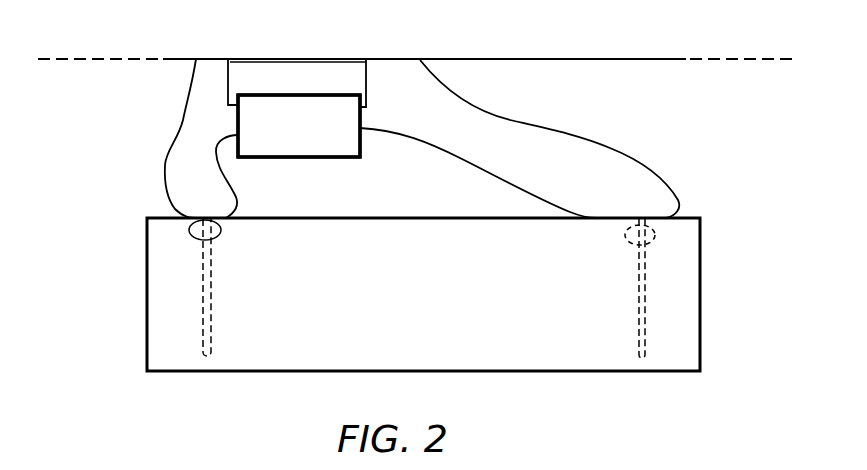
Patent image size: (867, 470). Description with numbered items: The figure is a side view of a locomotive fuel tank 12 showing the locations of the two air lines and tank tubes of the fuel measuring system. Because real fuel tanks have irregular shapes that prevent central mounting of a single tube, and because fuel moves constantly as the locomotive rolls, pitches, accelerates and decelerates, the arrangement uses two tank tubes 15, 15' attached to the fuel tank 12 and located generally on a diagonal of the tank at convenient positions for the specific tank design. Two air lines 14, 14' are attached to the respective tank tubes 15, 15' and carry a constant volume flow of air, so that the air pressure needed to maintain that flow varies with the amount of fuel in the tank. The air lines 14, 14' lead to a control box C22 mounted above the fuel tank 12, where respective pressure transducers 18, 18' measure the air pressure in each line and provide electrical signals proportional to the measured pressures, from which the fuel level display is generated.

The fuel tank 12 is at (414, 305).
The air line 14 is at (182, 149).
The air line 14' is at (527, 152).
The tank tube 15 is at (225, 287).
The tank tube 15' is at (618, 288).
The control box C22 is at (361, 118).
The pressure transducer 18 is at (351, 126).
The pressure transducer 18' is at (351, 126).